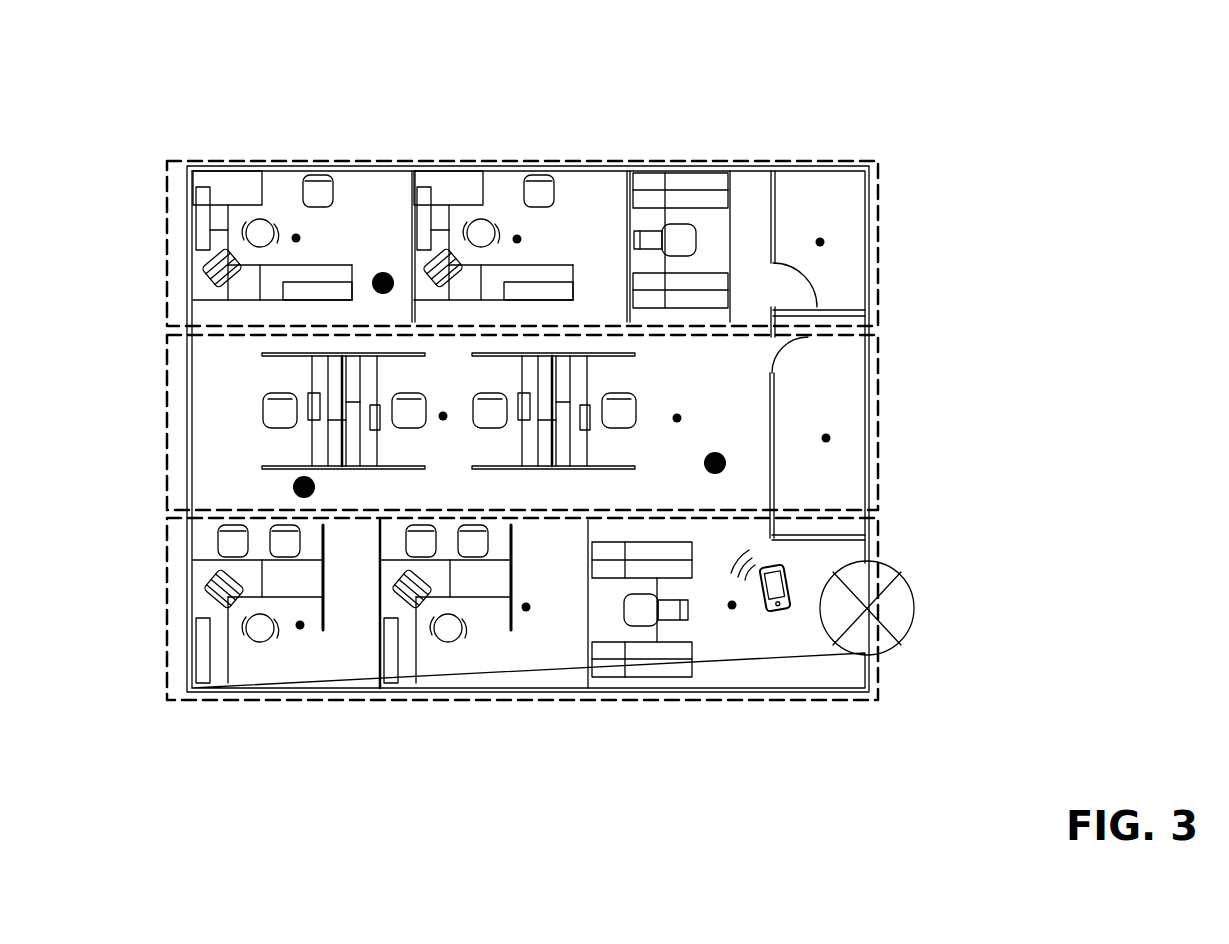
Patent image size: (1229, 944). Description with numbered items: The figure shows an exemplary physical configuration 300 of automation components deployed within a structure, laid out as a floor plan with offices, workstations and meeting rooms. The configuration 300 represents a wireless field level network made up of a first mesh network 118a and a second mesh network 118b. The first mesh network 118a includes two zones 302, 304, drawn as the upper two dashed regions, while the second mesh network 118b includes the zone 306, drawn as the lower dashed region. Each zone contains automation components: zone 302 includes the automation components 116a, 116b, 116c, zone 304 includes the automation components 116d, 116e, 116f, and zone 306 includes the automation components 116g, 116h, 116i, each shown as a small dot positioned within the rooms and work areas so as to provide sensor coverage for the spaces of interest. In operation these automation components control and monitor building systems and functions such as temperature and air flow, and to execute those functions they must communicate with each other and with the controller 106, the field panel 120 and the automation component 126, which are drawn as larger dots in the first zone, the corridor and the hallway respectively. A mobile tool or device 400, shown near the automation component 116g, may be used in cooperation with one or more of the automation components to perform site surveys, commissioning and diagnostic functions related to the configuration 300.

The physical configuration 300 is at (1073, 106).
The zone 302 is at (158, 216).
The zone 304 is at (158, 418).
The zone 306 is at (158, 600).
The controller 106 is at (383, 256).
The field panel 120 is at (283, 503).
The automation component 126 is at (715, 490).
The automation component 116a is at (827, 221).
The automation component 116b is at (525, 220).
The automation component 116c is at (295, 216).
The automation component 116d is at (445, 395).
The automation component 116e is at (678, 396).
The automation component 116f is at (845, 427).
The automation component 116g is at (740, 625).
The automation component 116h is at (516, 626).
The automation component 116i is at (298, 648).
The first mesh network 118a is at (954, 322).
The second mesh network 118b is at (956, 537).
The mobile tool or device 400 is at (787, 629).